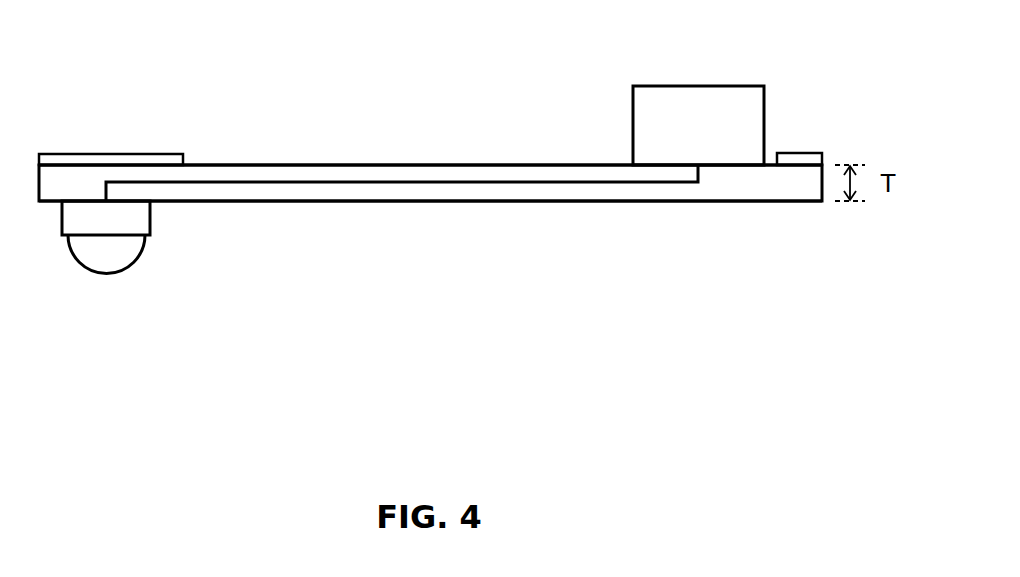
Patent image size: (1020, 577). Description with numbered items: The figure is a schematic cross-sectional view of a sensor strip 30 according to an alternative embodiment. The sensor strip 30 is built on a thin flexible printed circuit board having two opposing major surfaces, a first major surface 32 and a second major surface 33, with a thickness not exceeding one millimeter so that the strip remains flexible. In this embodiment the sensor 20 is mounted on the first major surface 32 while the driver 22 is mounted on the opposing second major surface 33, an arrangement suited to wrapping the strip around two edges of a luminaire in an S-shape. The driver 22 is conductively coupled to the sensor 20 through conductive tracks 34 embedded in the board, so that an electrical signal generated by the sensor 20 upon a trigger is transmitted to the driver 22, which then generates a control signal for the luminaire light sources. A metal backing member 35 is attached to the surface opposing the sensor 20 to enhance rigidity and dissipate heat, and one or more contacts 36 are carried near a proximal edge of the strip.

The sensor 20 is at (102, 250).
The driver 22 is at (702, 115).
The sensor strip 30 is at (415, 440).
The first major surface 32 is at (405, 201).
The second major surface 33 is at (483, 165).
The conductive tracks 34 is at (218, 181).
The metal backing member 35 is at (112, 155).
The contacts 36 is at (812, 155).